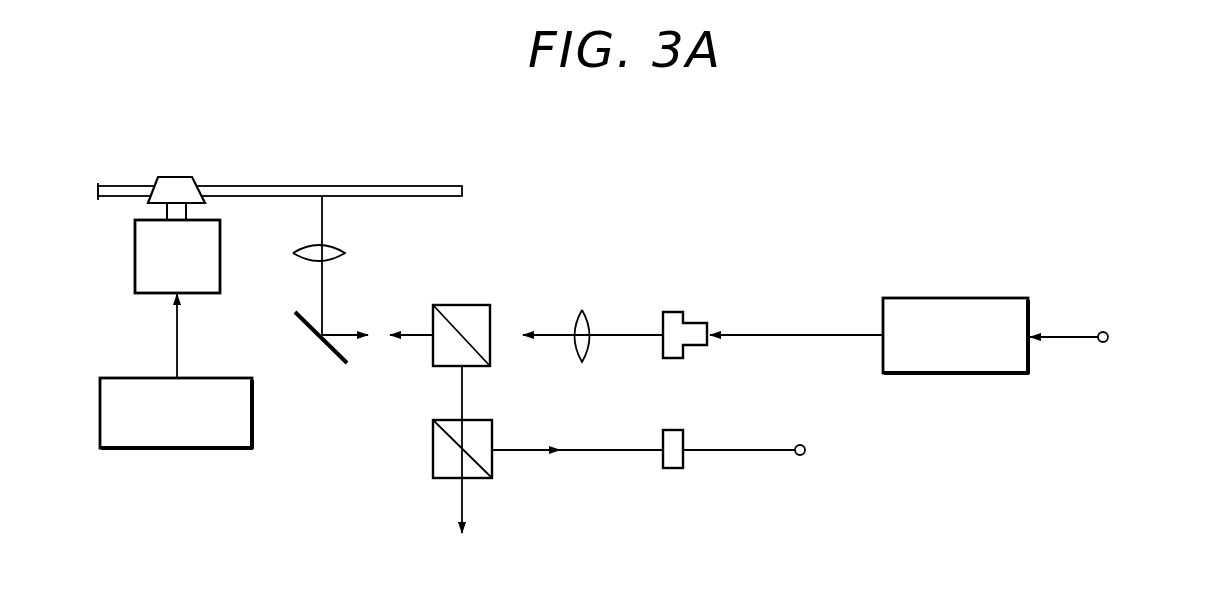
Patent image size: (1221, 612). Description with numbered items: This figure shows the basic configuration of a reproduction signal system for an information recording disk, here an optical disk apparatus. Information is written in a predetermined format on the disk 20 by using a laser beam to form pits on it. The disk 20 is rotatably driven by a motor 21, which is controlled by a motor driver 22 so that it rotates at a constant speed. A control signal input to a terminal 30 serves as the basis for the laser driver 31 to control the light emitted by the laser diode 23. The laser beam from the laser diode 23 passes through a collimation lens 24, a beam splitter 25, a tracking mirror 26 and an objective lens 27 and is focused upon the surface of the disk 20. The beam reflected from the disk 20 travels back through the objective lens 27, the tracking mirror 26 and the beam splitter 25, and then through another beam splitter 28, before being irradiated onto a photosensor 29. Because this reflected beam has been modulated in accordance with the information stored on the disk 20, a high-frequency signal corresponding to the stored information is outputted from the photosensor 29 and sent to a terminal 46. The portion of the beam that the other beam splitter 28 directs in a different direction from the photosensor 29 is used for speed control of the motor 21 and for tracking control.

The disk 20 is at (269, 185).
The motor 21 is at (135, 271).
The motor driver 22 is at (170, 448).
The laser diode 23 is at (695, 312).
The collimation lens 24 is at (585, 308).
The beam splitter 25 is at (473, 303).
The tracking mirror 26 is at (321, 366).
The objective lens 27 is at (345, 252).
The beam splitter 28 is at (445, 480).
The photosensor 29 is at (670, 470).
The terminal 30 is at (1103, 332).
The laser driver 31 is at (960, 297).
The terminal 46 is at (802, 457).